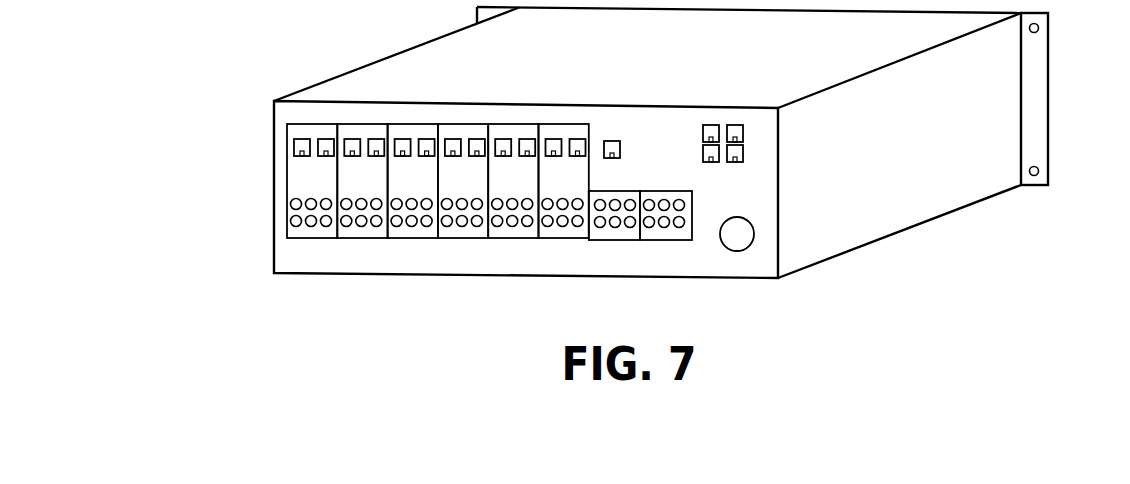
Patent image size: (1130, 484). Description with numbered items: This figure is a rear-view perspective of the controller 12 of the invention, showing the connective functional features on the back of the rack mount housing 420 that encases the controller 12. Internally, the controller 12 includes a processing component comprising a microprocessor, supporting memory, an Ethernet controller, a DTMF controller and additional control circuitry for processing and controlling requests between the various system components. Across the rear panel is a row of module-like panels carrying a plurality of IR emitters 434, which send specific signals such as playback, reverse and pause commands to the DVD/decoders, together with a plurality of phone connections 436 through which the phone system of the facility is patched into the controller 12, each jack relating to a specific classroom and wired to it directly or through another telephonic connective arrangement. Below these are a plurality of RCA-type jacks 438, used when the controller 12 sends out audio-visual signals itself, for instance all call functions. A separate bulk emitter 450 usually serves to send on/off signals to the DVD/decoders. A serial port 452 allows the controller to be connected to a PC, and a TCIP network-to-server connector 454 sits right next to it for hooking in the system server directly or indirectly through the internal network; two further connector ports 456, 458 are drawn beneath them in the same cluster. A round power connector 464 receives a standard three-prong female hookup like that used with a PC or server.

The controller 12 is at (1060, 97).
The rack mount housing 420 is at (834, 257).
The IR emitters 434 is at (336, 155).
The phone connections 436 is at (324, 138).
The RCA-type jacks 438 is at (291, 207).
The bulk emitter 450 is at (622, 148).
The serial port 452 is at (712, 125).
The TCIP network-to-server connector 454 is at (738, 125).
The port 456 is at (744, 152).
The port 458 is at (703, 152).
The power connector 464 is at (737, 251).